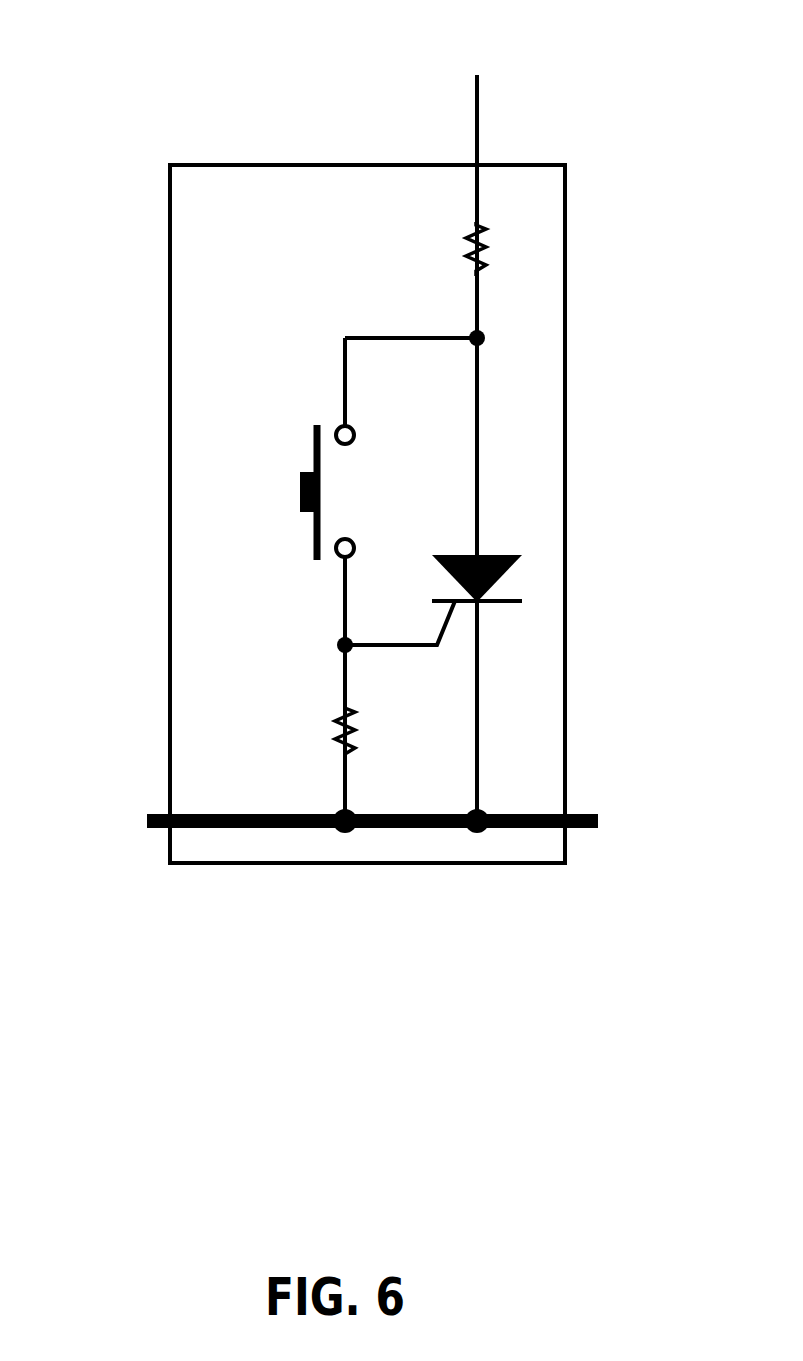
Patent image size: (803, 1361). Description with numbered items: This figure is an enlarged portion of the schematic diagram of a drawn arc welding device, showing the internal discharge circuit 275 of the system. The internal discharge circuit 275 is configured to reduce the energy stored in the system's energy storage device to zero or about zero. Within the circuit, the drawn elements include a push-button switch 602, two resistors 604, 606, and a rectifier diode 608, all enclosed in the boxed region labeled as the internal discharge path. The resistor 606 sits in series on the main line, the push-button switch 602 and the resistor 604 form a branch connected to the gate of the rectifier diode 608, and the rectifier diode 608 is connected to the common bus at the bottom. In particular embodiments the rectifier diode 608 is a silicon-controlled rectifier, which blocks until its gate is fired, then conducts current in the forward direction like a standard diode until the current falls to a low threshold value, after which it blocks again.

The internal discharge circuit 275 is at (145, 62).
The push-button switch 602 is at (280, 560).
The resistor 604 is at (298, 729).
The resistor 606 is at (524, 271).
The rectifier diode 608 is at (519, 640).